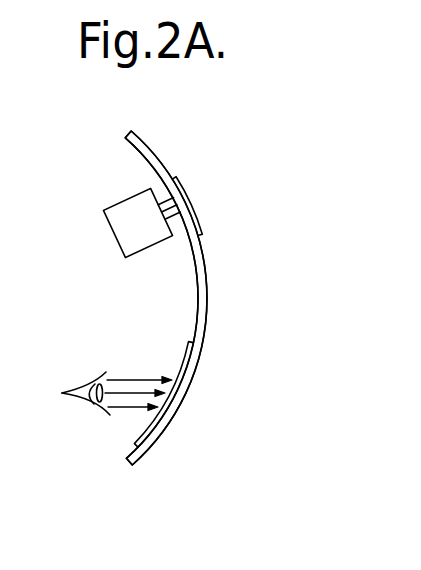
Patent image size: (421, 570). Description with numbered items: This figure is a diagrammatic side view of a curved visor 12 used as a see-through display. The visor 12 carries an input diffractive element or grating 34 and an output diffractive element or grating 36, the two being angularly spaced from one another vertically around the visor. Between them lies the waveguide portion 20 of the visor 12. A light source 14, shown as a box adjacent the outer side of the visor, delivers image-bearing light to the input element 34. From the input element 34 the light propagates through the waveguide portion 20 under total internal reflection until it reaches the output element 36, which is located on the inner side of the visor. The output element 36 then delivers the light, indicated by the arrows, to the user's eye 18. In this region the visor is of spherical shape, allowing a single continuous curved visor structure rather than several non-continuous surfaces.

The visor 12 is at (140, 152).
The light source 14 is at (138, 228).
The user's eye 18 is at (88, 405).
The waveguide portion 20 is at (200, 293).
The input diffractive element 34 is at (193, 203).
The output diffractive element 36 is at (172, 393).